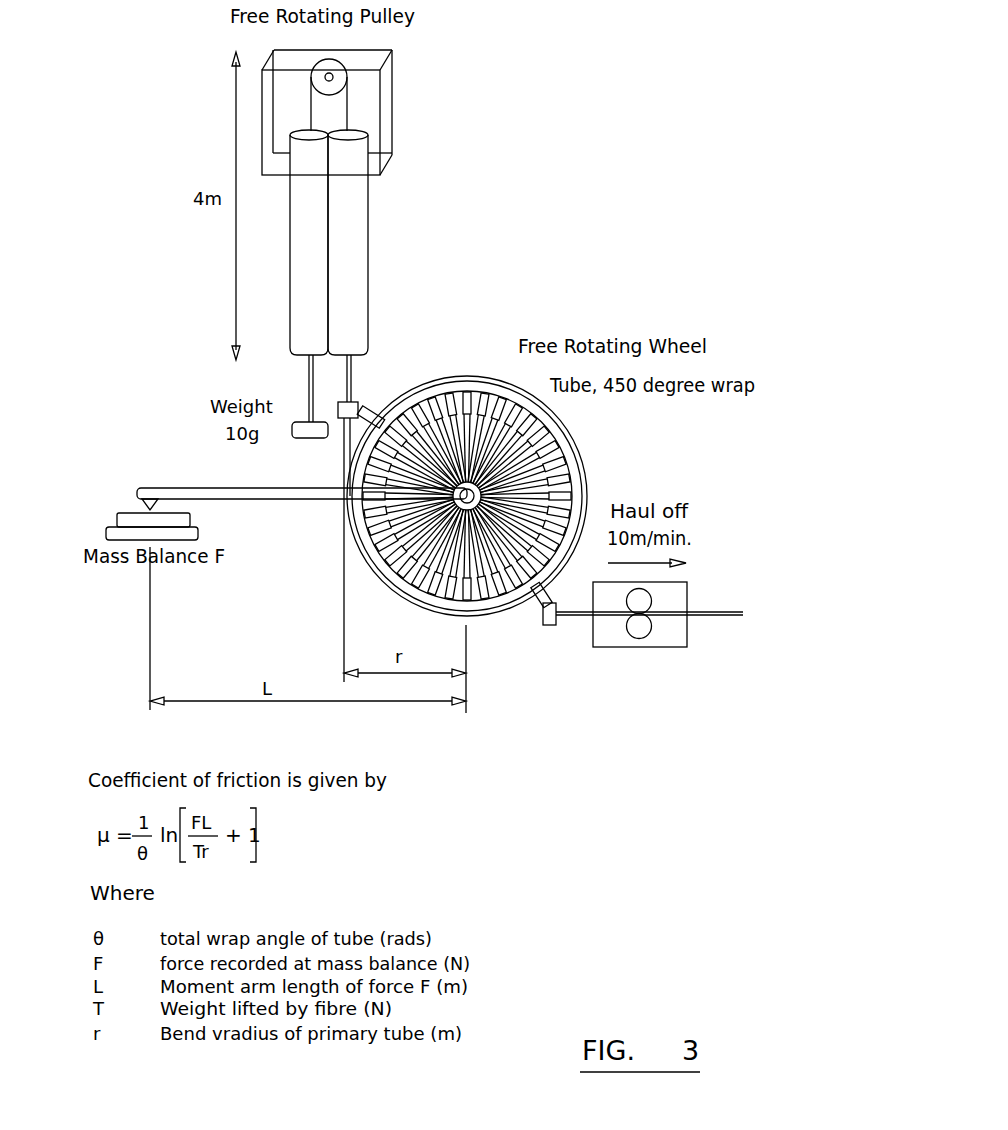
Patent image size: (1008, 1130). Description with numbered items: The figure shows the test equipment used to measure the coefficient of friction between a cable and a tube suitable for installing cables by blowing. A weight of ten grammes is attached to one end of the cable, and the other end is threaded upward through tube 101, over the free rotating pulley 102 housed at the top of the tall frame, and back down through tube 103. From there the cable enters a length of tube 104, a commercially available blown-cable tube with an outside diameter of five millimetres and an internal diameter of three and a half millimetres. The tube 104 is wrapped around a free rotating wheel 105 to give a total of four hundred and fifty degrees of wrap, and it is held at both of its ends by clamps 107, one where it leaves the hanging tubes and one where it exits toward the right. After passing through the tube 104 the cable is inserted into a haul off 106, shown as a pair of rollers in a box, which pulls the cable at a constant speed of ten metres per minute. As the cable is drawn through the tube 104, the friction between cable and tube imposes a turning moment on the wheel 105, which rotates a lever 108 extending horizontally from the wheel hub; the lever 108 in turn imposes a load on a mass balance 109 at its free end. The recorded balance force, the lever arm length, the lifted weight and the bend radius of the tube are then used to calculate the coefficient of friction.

The tube 101 is at (310, 272).
The pulley 102 is at (321, 68).
The tube 103 is at (348, 234).
The tube 104 is at (516, 618).
The wheel 105 is at (563, 472).
The haul off 106 is at (663, 638).
The clamps 107 is at (361, 401).
The lever 108 is at (193, 493).
The mass balance 109 is at (107, 530).